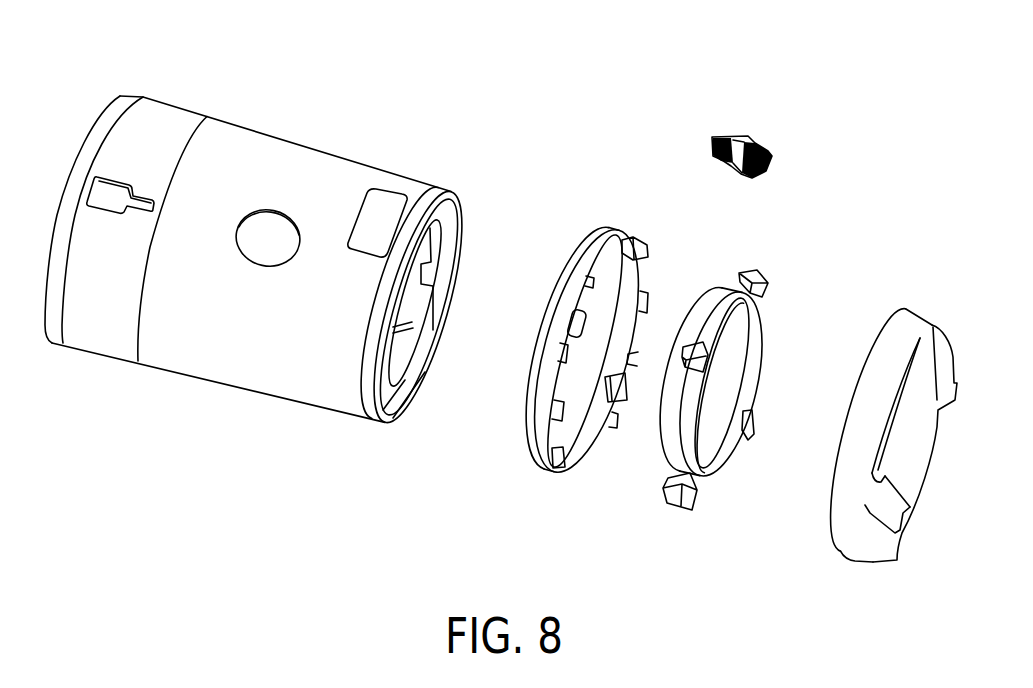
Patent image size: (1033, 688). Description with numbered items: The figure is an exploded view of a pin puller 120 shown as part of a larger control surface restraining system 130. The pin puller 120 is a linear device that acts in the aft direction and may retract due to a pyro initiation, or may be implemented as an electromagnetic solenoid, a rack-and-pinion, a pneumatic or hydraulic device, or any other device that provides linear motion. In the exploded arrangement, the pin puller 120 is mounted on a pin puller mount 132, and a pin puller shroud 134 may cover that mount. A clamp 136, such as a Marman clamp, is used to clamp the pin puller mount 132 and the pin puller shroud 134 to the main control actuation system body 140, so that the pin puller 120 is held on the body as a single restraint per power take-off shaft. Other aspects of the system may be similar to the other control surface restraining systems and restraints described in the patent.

The pin puller 120 is at (757, 110).
The control surface restraining system 130 is at (262, 216).
The pin puller mount 132 is at (667, 538).
The pin puller shroud 134 is at (919, 284).
The clamp 136 is at (533, 498).
The main control actuation system body 140 is at (280, 181).